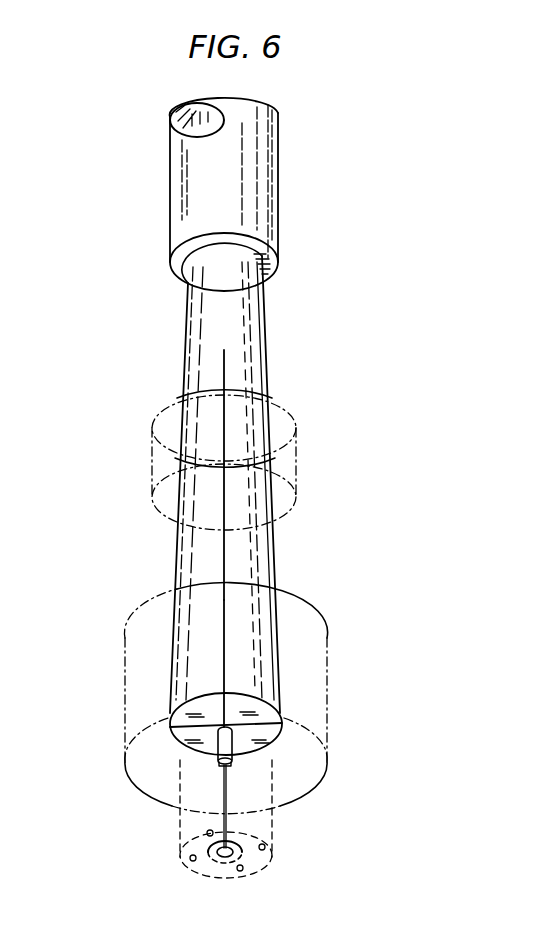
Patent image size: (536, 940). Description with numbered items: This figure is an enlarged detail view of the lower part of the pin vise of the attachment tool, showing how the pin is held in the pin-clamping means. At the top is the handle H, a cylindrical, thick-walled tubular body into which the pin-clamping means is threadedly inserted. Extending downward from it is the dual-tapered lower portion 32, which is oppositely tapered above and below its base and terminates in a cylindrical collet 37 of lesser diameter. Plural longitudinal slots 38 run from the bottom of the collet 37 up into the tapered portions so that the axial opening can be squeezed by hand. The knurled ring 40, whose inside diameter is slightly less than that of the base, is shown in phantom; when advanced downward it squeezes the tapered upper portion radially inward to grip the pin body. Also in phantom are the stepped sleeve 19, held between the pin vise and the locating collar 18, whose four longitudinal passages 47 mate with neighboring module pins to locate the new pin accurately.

The handle H is at (278, 203).
The dual-tapered lower portion 32 is at (180, 452).
The knurled ring 40 is at (296, 497).
The stepped sleeve 19 is at (327, 642).
The longitudinal slots 38 is at (228, 648).
The collet 37 is at (232, 733).
The locating collar 18 is at (180, 820).
The longitudinal passages 47 is at (243, 868).